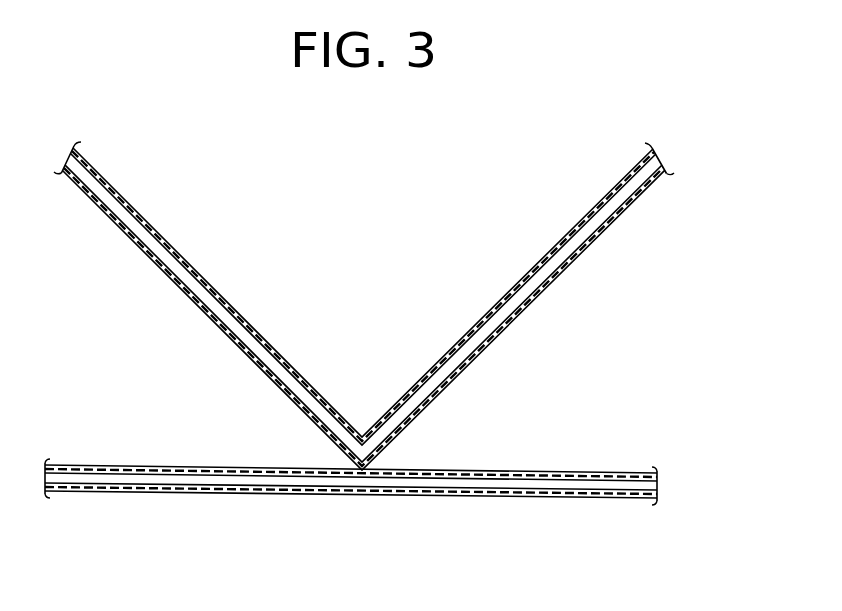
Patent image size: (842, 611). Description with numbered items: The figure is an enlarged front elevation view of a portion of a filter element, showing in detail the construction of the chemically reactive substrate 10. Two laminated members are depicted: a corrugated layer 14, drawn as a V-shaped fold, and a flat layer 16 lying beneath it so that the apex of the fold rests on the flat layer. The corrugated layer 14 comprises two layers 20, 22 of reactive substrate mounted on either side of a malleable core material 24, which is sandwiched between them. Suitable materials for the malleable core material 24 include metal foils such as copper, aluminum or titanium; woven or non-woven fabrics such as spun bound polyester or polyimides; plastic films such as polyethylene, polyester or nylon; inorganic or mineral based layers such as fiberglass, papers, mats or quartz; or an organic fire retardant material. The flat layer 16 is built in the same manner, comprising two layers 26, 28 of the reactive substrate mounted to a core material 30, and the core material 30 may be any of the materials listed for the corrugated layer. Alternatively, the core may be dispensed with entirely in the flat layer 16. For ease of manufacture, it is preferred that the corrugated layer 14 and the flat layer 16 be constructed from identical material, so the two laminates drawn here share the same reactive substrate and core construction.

The chemically reactive substrate 10 is at (701, 183).
The corrugated layer 14 is at (572, 265).
The flat layer 16 is at (622, 473).
The layer of reactive substrate 20 is at (532, 272).
The layer of reactive substrate 22 is at (522, 313).
The malleable core material 24 is at (482, 334).
The layer of reactive substrate 26 is at (541, 471).
The layer of reactive substrate 28 is at (477, 498).
The core material 30 is at (410, 483).